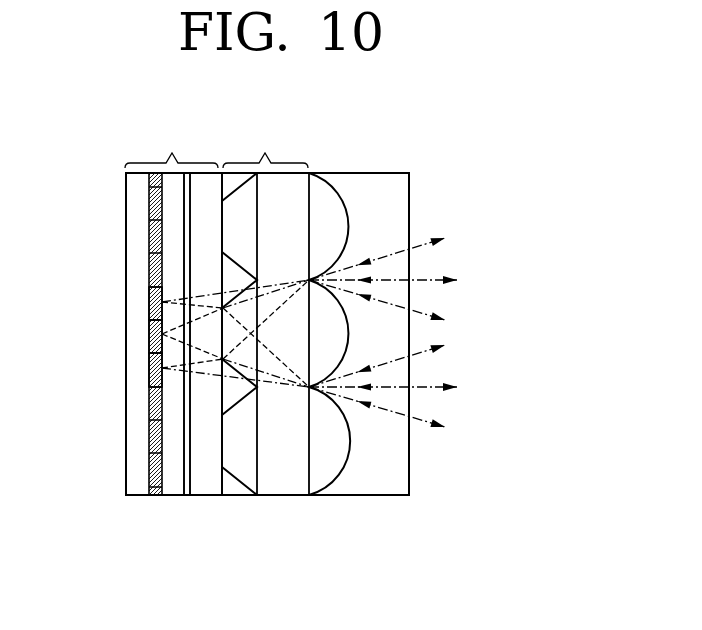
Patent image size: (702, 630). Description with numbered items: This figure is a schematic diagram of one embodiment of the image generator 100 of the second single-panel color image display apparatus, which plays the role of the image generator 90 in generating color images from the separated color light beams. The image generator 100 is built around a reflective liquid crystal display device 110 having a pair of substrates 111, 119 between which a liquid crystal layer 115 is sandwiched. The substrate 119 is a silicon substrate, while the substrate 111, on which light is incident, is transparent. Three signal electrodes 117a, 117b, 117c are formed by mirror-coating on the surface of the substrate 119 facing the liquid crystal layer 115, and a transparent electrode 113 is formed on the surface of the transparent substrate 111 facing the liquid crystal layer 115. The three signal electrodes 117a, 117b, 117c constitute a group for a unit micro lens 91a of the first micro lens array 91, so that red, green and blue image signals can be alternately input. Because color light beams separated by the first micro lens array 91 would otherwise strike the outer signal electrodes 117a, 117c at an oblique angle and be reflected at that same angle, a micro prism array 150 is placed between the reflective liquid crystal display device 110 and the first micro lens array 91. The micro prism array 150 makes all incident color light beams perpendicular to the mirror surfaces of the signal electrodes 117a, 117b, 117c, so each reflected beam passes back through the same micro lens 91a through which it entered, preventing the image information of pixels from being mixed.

The image generator 90 is at (104, 145).
The image generator 100 is at (600, 330).
The reflective liquid crystal display device 110 is at (171, 308).
The micro prism array 150 is at (265, 308).
The substrate 111 is at (206, 492).
The transparent electrode 113 is at (187, 494).
The liquid crystal layer 115 is at (173, 488).
The signal electrode 117a is at (162, 368).
The signal electrode 117b is at (162, 334).
The signal electrode 117c is at (162, 302).
The substrate 119 is at (133, 450).
The first micro lens array 91 is at (378, 485).
The micro lens 91a is at (320, 480).